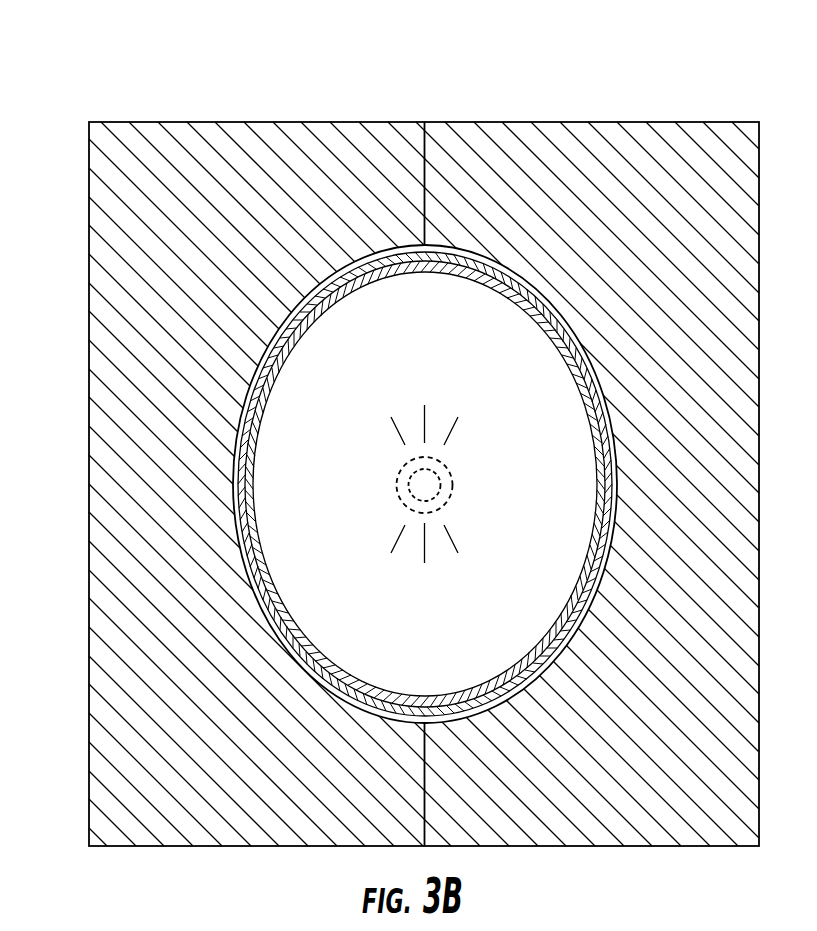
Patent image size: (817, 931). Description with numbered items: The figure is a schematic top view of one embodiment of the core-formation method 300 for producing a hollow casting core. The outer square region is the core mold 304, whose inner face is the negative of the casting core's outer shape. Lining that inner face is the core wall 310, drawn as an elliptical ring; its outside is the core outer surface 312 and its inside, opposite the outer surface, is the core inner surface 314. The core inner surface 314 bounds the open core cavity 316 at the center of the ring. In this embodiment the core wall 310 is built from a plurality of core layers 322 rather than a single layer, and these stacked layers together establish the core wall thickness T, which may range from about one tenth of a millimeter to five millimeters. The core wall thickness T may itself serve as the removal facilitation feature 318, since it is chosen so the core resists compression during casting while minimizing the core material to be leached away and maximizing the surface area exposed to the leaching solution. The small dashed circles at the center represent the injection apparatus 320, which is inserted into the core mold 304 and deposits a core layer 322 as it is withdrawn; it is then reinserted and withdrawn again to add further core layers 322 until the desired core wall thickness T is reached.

The core-formation method 300 is at (448, 426).
The core mold 304 is at (747, 217).
The core wall 310 is at (411, 458).
The core outer surface 312 is at (240, 562).
The core inner surface 314 is at (253, 480).
The core cavity 316 is at (463, 609).
The removal facilitation feature 318 is at (424, 543).
The injection apparatus 320 is at (452, 471).
The core layer 322 is at (300, 305).
The core wall thickness T is at (517, 373).